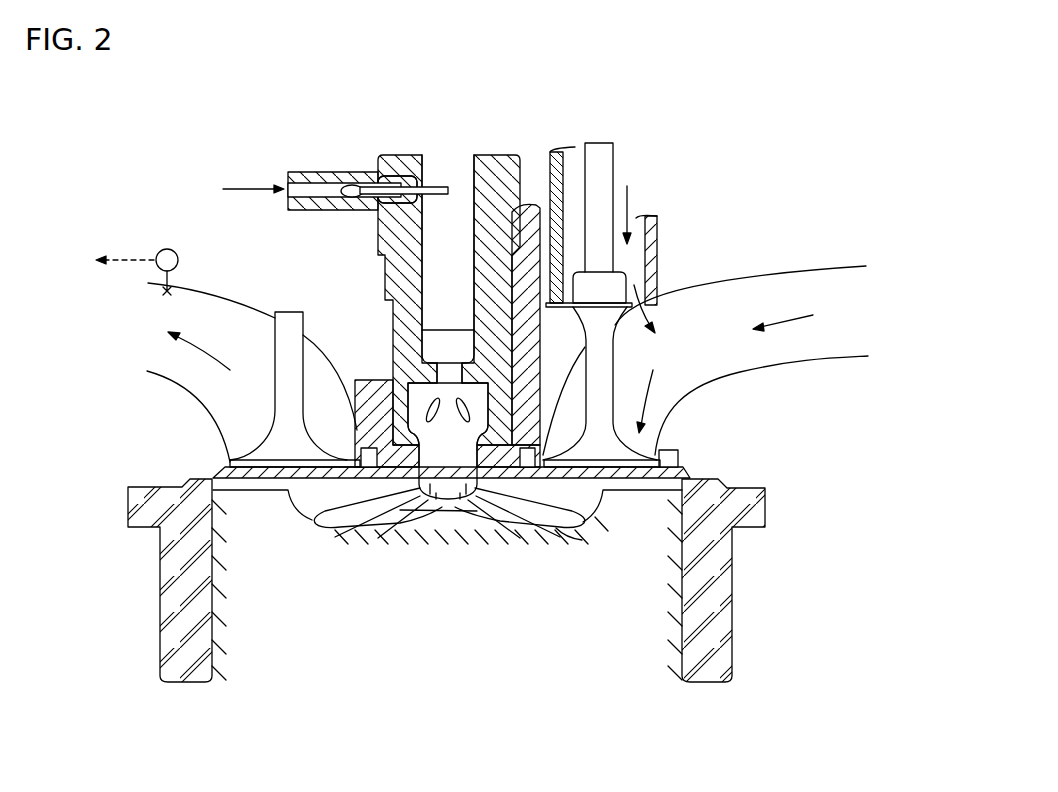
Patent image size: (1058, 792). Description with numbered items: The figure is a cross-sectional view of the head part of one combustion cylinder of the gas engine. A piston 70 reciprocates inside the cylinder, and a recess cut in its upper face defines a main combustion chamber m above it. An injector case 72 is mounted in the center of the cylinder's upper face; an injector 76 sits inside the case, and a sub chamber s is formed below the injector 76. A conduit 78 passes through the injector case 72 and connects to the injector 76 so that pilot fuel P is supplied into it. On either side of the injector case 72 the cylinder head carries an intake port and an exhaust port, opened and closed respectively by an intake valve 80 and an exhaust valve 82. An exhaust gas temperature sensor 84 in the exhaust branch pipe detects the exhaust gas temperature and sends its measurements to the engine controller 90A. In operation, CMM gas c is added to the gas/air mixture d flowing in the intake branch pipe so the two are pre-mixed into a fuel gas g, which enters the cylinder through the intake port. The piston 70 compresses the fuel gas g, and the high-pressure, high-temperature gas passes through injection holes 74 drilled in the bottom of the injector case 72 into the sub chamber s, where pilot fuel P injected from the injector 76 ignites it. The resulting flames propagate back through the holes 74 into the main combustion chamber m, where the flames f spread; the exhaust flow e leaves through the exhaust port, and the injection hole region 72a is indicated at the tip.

The piston 70 is at (638, 657).
The injector case 72 is at (385, 155).
The injection hole 72a is at (437, 510).
The injection holes 74 is at (457, 480).
The injector 76 is at (452, 158).
The conduit 78 is at (332, 186).
The intake valve 80 is at (600, 142).
The exhaust valve 82 is at (290, 311).
The exhaust gas temperature sensor 84 is at (167, 248).
The engine controller 90A is at (96, 275).
The pilot fuel P is at (230, 186).
The CMM gas c is at (634, 198).
The gas/air mixture d is at (790, 315).
The exhaust flow e is at (212, 355).
The flames f is at (560, 528).
The fuel gas g is at (652, 394).
The main combustion chamber m is at (486, 510).
The sub chamber s is at (380, 520).